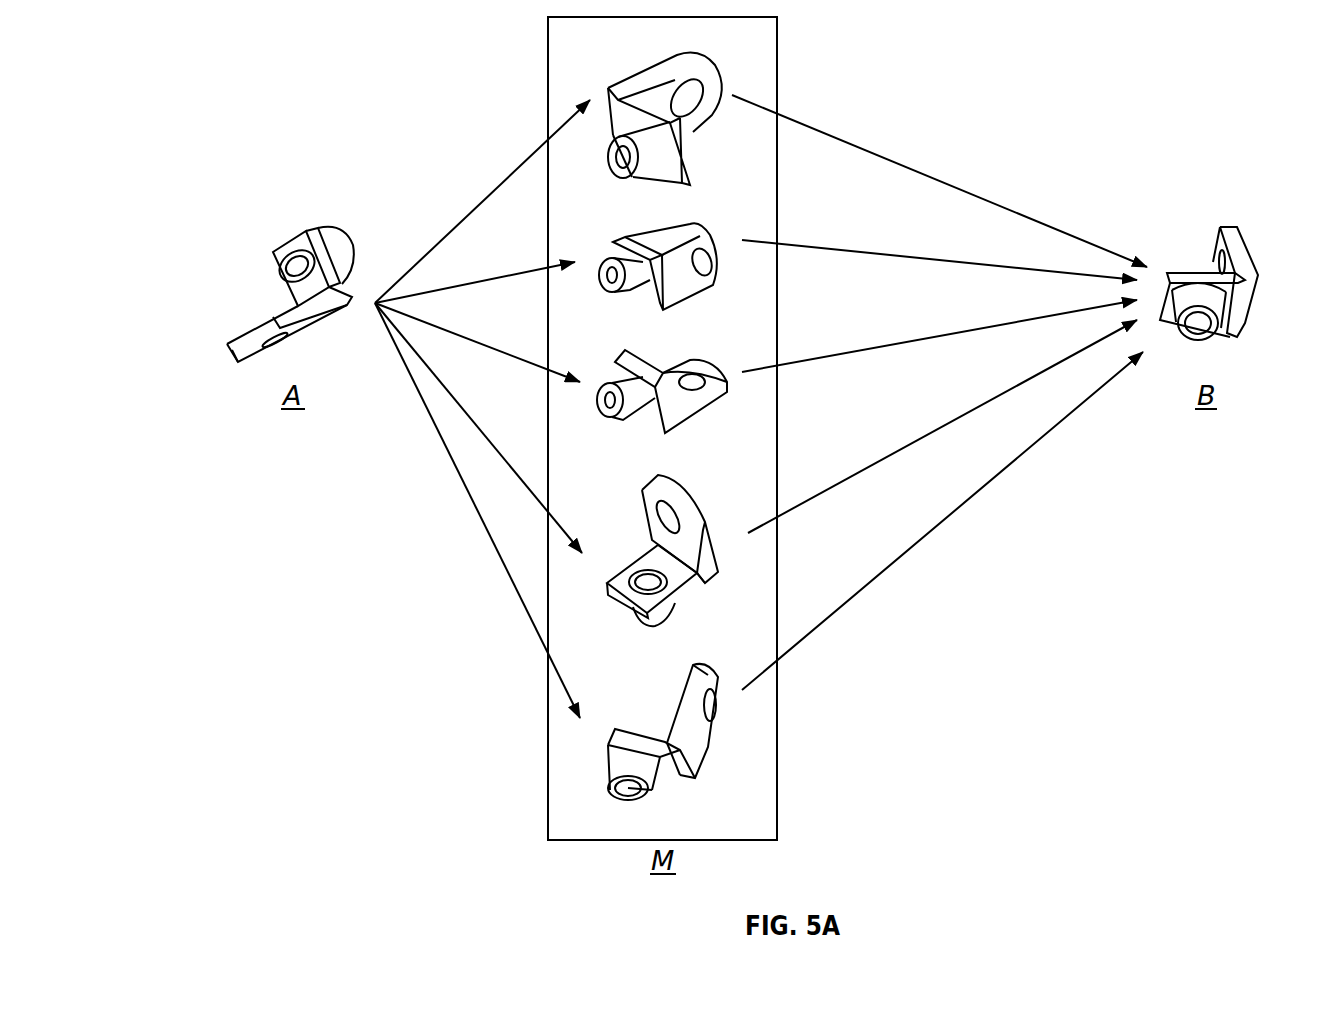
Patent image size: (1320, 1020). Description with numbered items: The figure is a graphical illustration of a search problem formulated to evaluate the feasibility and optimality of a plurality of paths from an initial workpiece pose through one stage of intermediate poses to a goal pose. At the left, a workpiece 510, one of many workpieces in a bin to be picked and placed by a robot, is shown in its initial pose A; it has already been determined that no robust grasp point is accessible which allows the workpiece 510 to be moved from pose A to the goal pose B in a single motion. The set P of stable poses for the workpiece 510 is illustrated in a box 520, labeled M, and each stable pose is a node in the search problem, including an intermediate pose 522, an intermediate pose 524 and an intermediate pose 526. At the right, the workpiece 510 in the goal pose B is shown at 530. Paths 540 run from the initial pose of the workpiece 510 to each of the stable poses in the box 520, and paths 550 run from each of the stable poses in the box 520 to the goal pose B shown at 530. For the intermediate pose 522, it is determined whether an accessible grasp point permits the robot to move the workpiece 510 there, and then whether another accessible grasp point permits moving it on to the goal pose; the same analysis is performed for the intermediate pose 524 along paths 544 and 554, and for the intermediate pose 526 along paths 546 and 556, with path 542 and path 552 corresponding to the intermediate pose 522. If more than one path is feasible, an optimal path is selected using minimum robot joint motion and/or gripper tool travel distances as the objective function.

The workpiece 510 is at (283, 242).
The box 520 is at (777, 31).
The intermediate pose 522 is at (670, 78).
The intermediate pose 524 is at (718, 243).
The intermediate pose 526 is at (713, 373).
The workpiece in goal pose B 530 is at (1195, 196).
The paths 540 is at (431, 529).
The path 542 is at (506, 182).
The path 544 is at (530, 273).
The path 546 is at (529, 363).
The paths 550 is at (1014, 573).
The path 552 is at (932, 176).
The path 554 is at (912, 259).
The path 556 is at (866, 351).